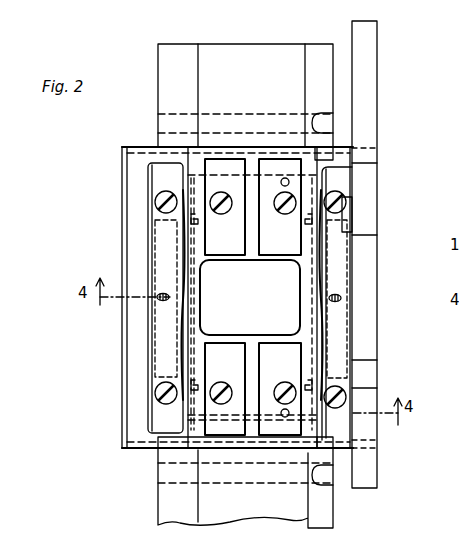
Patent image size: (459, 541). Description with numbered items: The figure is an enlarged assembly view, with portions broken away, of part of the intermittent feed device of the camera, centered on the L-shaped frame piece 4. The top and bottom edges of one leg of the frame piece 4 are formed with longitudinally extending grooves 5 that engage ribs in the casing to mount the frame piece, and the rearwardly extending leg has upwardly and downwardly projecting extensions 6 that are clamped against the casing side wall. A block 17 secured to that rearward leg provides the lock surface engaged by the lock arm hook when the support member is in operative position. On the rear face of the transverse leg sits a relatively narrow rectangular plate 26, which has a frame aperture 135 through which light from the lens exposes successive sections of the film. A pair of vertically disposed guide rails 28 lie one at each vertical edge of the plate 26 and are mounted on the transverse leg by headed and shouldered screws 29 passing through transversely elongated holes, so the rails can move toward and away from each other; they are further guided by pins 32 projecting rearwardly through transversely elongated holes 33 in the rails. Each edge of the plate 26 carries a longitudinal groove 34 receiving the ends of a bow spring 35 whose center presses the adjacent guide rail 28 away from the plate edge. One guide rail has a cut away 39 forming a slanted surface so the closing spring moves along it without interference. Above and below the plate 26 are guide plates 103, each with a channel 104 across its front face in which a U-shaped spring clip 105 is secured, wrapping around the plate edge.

The frame piece 4 is at (137, 172).
The grooves 5 is at (146, 153).
The extensions 6 is at (370, 58).
The block 17 is at (348, 212).
The plate 26 is at (186, 440).
The guide rails 28 is at (160, 368).
The screws 29 is at (152, 396).
The pins 32 is at (162, 300).
The holes 33 is at (163, 302).
The groove 34 is at (186, 340).
The bow springs 35 is at (187, 280).
The cut away 39 is at (152, 300).
The guide plates 103 is at (237, 52).
The channel 104 is at (175, 117).
The spring clips 105 is at (335, 122).
The frame aperture 135 is at (212, 275).